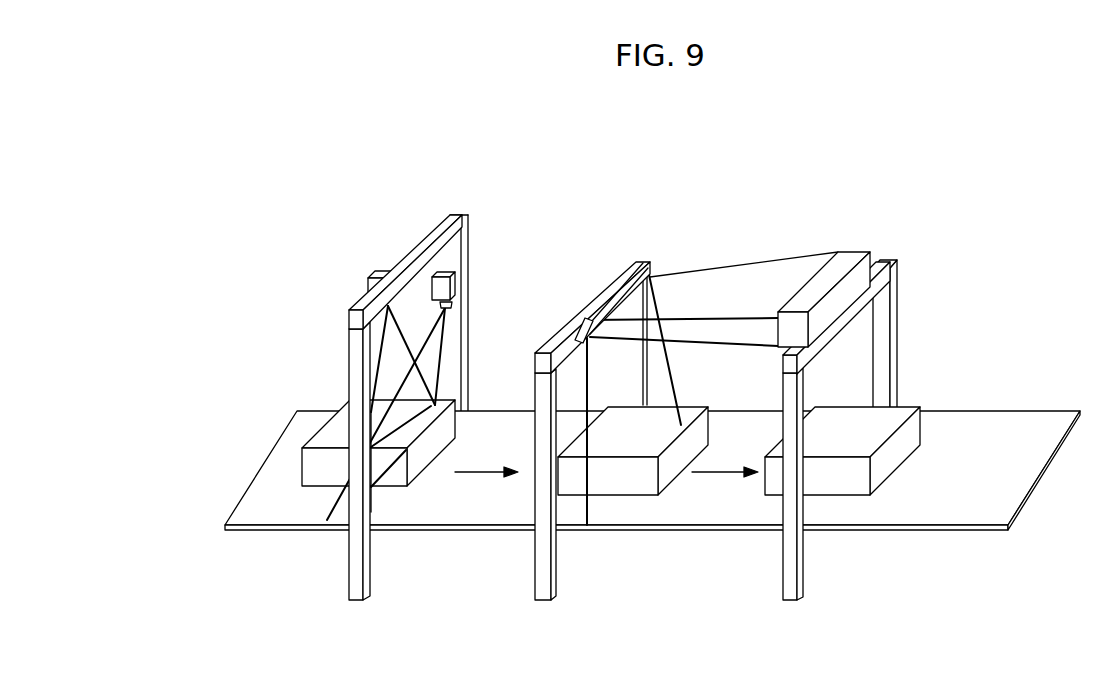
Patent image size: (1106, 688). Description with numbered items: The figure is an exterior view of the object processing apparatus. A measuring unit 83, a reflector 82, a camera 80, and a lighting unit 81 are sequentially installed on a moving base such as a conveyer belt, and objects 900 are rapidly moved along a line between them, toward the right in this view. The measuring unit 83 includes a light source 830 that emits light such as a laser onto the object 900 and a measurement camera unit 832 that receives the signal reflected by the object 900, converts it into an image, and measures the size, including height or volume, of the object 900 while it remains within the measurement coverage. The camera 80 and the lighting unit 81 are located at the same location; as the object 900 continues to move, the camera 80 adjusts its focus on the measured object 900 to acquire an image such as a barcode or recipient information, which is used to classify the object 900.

The measuring unit 83 is at (439, 374).
The light source 830 is at (381, 272).
The measurement camera unit 832 is at (452, 272).
The reflector 82 is at (650, 268).
The camera 80 is at (843, 273).
The lighting unit 81 is at (852, 254).
The object 900 is at (405, 484).